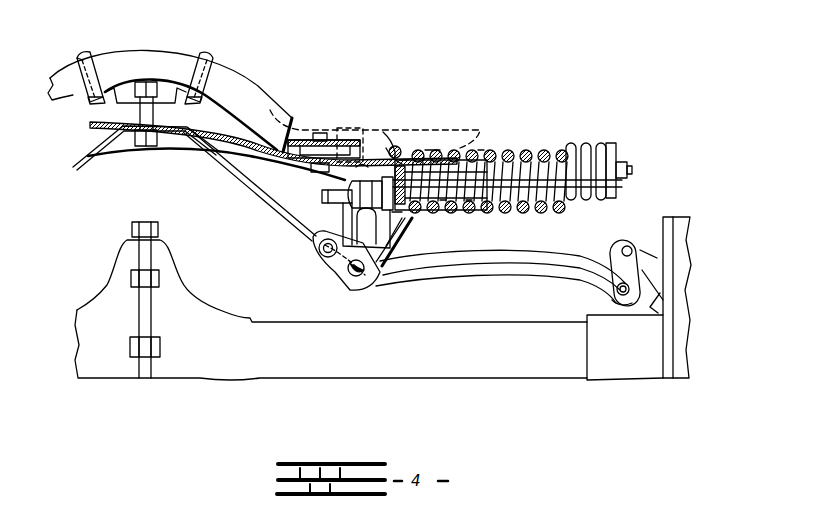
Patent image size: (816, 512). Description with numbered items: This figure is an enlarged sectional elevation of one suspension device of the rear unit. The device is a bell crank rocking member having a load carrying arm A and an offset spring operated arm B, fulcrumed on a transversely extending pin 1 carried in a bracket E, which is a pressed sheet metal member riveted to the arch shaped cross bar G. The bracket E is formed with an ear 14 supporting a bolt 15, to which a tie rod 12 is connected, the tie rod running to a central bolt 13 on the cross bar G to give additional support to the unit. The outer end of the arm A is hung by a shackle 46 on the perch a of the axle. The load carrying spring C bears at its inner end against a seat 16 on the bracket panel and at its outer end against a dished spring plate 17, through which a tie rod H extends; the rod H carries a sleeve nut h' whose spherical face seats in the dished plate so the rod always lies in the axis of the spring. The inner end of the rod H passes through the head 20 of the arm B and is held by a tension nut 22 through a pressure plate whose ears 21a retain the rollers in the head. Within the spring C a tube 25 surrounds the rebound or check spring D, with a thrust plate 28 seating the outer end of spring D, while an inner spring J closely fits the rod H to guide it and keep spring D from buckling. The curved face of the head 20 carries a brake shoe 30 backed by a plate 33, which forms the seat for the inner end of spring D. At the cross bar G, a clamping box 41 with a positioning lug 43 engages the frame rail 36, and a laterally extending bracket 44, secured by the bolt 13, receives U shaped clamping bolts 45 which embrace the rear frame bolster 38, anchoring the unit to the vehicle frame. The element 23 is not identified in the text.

The transversely extending pin 1 is at (399, 277).
The tie rod 12 is at (260, 205).
The central bolt 13 is at (144, 82).
The ear 14 is at (335, 262).
The bolt 15 is at (316, 252).
The seat 16 is at (432, 148).
The dished spring plate 17 is at (614, 146).
The head 20 is at (378, 156).
The ear 21a is at (390, 215).
The tension nut 22 is at (322, 196).
The cap 23 is at (358, 175).
The tube 25 is at (480, 150).
The thrust plate 28 is at (566, 150).
The brake shoe 30 is at (384, 144).
The backing plate 33 is at (404, 157).
The frame rail 36 is at (347, 128).
The rear cross member 38 is at (250, 93).
The clamping box 41 is at (292, 138).
The positioning lug 43 is at (300, 156).
The bracket 44 is at (107, 120).
The U-shaped clamping bolt 45 is at (89, 57).
The shackle 46 is at (620, 262).
The load carrying arm A is at (517, 267).
The spring operated arm B is at (382, 212).
The supporting spring C is at (504, 204).
The rebound or check spring D is at (444, 207).
The bracket E is at (343, 217).
The cross bar G is at (174, 150).
The tie rod H is at (632, 172).
The sleeve nut h' is at (640, 163).
The inner spring J is at (470, 207).
The perch a is at (657, 260).